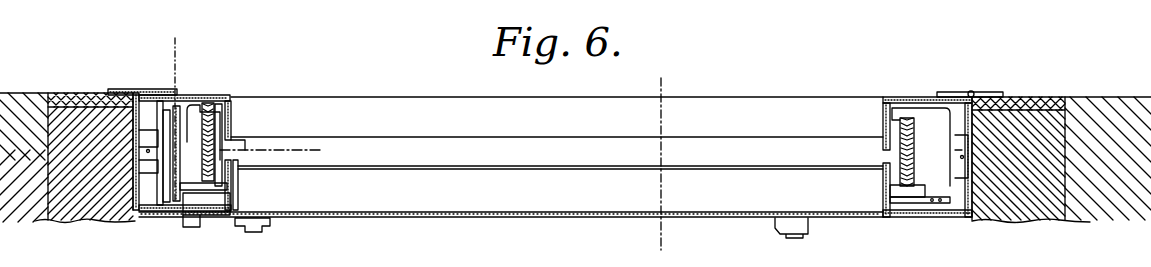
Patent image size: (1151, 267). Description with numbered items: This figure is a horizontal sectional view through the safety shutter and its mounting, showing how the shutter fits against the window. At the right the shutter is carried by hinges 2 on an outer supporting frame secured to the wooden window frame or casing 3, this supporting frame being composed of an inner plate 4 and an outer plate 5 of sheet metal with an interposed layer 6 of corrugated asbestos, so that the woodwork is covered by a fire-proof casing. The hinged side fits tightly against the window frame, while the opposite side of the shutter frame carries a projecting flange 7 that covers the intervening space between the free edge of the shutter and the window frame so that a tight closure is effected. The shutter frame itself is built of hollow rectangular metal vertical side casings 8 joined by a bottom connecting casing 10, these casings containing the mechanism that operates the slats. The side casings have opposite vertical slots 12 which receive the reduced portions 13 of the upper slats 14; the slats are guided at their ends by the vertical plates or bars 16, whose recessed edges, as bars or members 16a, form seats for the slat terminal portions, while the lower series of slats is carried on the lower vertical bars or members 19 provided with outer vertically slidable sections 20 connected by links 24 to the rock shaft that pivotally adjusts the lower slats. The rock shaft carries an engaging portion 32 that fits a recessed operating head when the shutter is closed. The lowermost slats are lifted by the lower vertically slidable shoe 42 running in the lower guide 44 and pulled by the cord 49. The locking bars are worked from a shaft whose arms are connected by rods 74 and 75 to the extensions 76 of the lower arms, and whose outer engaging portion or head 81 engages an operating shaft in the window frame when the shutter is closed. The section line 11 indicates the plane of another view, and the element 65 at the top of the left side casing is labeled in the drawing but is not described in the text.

The hinges 2 is at (975, 91).
The window frame or casing 3 is at (546, 222).
The inner plate 4 is at (52, 110).
The outer plate 5 is at (65, 93).
The interposed layer 6 is at (90, 93).
The projecting flange 7 is at (139, 95).
The vertical side casings 8 is at (182, 93).
The bottom connecting casing 10 is at (174, 111).
The section line 11 is at (680, 233).
The vertical slots 12 is at (240, 148).
The reduced portions 13 is at (72, 250).
The upper slats 14 is at (368, 150).
The vertical plates or bars 16 is at (898, 190).
The bars or members 16a is at (206, 217).
The lower vertical bars or members 19 is at (232, 118).
The vertically slidable sections 20 is at (207, 110).
The links 24 is at (230, 125).
The engaging portion 32 is at (258, 233).
The lower vertically slidable shoe 42 is at (148, 140).
The lower guide 44 is at (154, 178).
The cord 49 is at (92, 212).
The frame top strip 65 is at (190, 97).
The rod 74 is at (216, 208).
The rod 75 is at (935, 224).
The extensions 76 is at (171, 212).
The engaging portion or head 81 is at (778, 235).